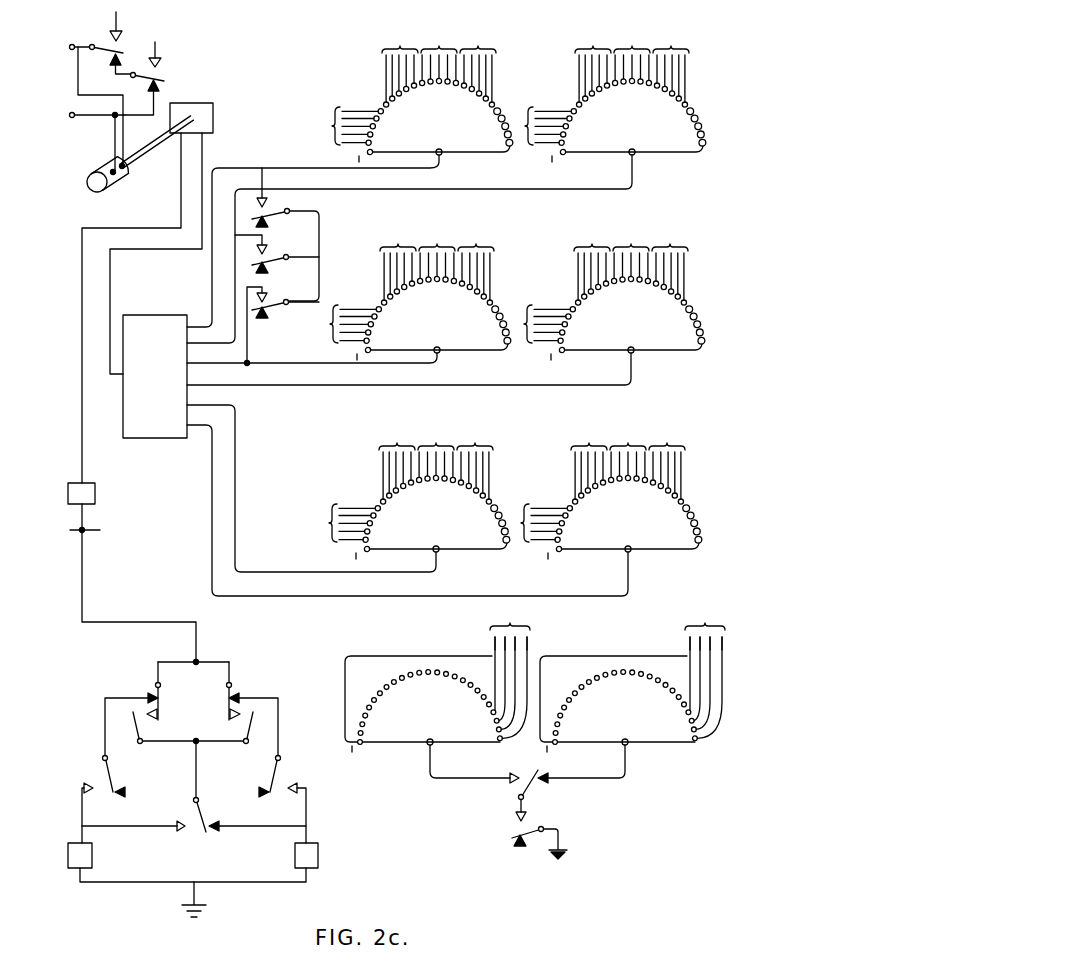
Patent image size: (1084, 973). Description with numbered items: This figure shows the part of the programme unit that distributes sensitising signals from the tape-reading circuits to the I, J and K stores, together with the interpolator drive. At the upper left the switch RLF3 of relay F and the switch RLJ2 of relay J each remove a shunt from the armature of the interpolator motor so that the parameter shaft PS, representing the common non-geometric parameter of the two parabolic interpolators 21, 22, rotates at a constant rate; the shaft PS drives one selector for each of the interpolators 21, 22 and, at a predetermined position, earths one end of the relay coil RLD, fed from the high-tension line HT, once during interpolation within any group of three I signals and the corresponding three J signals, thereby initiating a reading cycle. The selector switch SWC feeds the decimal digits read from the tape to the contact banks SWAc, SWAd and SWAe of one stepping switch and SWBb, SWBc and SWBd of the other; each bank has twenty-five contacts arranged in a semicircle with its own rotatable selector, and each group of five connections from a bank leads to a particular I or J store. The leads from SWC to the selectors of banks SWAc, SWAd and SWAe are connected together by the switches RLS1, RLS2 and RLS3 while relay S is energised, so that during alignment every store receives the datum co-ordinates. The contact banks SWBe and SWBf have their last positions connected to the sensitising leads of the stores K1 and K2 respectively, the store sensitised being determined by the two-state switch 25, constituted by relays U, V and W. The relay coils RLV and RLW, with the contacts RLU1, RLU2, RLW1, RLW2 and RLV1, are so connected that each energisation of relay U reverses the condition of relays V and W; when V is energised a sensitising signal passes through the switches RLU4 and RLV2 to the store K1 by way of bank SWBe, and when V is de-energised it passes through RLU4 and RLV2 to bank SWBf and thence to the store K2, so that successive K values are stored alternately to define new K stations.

The switch F3 of relay F RLF3 is at (101, 45).
The switch J2 of relay J RLJ2 is at (145, 72).
The interpolator 21 is at (204, 99).
The interpolator 22 is at (223, 86).
The parameter shaft PS is at (151, 146).
The selector switch SWC is at (155, 376).
The switch S1 of relay S RLS1 is at (258, 216).
The switch S2 of relay S RLS2 is at (258, 262).
The switch S3 of relay S RLS3 is at (258, 307).
The contact bank SWAc of stepping switch SWA SWAc is at (415, 92).
The contact bank SWAd of stepping switch SWA SWAd is at (608, 92).
The contact bank SWAe of stepping switch SWA SWAe is at (413, 290).
The contact bank SWBb of stepping switch SWB SWBb is at (607, 290).
The contact bank SWBc of stepping switch SWB SWBc is at (412, 489).
The contact bank SWBd of stepping switch SWB SWBd is at (604, 489).
The contact bank SWBe of stepping switch SWB SWBe is at (437, 687).
The contact bank SWBf of stepping switch SWB SWBf is at (632, 687).
The store K1 is at (511, 628).
The store K2 is at (706, 628).
The relay coil D RLD is at (141, 491).
The H.T. line HT is at (100, 531).
The two-state switch 25 is at (203, 647).
The switch U1 of relay U RLU1 is at (129, 709).
The switch U2 of relay U RLU2 is at (255, 709).
The switch W1 of relay W RLW1 is at (118, 800).
The switch W2 of relay W RLW2 is at (293, 800).
The switch V1 of relay V RLV1 is at (194, 813).
The relay coil V RLV is at (137, 855).
The relay coil W RLW is at (366, 857).
The switch V2 of relay V RLV2 is at (527, 783).
The switch U4 of relay U RLU4 is at (508, 839).